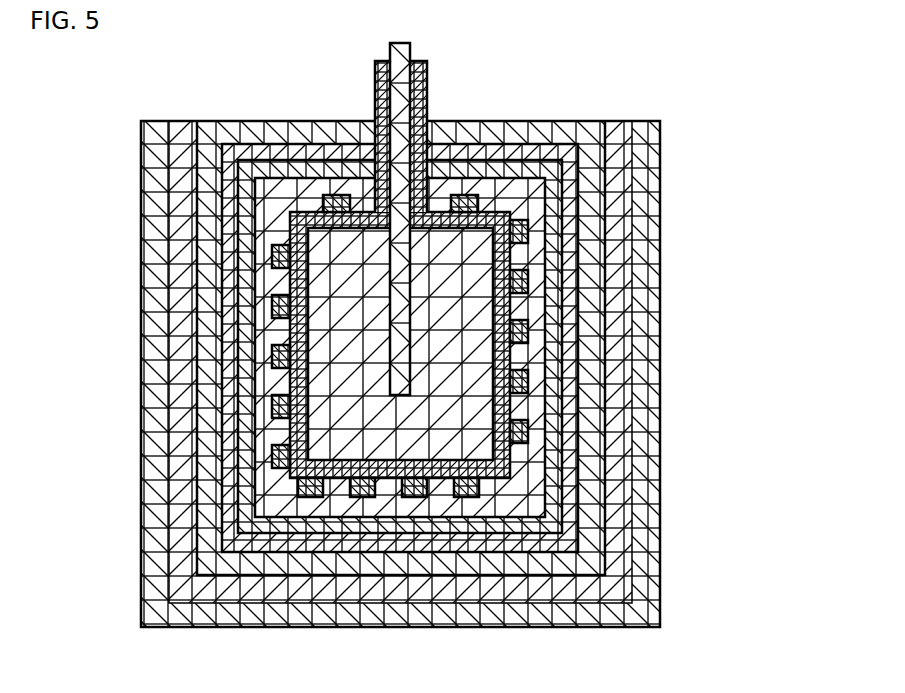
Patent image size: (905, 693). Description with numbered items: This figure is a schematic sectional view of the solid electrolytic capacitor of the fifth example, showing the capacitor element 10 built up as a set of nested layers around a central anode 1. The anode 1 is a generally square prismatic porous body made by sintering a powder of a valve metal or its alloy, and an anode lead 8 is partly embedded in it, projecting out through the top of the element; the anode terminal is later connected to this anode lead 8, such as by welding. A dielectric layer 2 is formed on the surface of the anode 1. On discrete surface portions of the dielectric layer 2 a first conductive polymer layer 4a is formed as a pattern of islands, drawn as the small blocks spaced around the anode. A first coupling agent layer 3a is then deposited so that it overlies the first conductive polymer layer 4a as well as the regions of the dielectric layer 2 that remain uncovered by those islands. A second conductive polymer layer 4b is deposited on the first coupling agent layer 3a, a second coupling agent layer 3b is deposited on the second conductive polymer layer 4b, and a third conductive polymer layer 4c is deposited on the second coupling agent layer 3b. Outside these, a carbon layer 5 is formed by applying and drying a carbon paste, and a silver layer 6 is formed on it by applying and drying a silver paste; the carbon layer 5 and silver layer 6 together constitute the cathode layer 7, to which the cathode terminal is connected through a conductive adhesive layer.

The anode 1 is at (450, 245).
The dielectric layer 2 is at (497, 263).
The first coupling agent layer 3a is at (523, 292).
The second coupling agent layer 3b is at (570, 455).
The first conductive polymer layer 4a is at (530, 328).
The second conductive polymer layer 4b is at (553, 372).
The third conductive polymer layer 4c is at (590, 410).
The carbon layer 5 is at (622, 500).
The silver layer 6 is at (645, 557).
The cathode layer 7 is at (767, 490).
The anode lead 8 is at (397, 318).
The capacitor element 10 is at (650, 102).